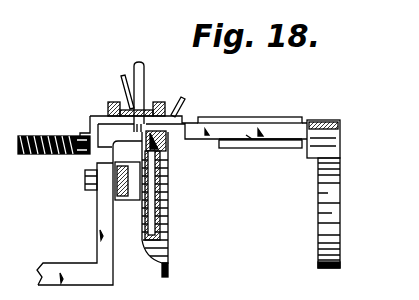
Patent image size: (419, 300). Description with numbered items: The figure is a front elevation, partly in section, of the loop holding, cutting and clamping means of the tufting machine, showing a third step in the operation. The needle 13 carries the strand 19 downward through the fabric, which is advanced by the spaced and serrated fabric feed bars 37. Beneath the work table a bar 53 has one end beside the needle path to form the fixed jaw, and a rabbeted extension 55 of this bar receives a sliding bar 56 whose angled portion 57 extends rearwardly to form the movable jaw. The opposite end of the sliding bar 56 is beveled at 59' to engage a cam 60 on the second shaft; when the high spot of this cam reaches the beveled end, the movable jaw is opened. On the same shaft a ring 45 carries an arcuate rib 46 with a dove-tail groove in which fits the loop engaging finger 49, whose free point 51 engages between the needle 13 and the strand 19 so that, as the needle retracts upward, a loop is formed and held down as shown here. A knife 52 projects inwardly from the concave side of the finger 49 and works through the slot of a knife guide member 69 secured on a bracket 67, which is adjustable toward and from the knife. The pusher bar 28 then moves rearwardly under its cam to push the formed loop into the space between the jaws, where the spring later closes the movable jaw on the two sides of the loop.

The needle 13 is at (143, 80).
The strand 19 is at (184, 101).
The pusher bar 28 is at (125, 104).
The fabric feed bars 37 is at (109, 104).
The ring 45 is at (168, 272).
The rib 46 is at (166, 233).
The loop engaging finger 49 is at (161, 218).
The point 51 is at (181, 121).
The knife 52 is at (150, 191).
The bar 53 is at (295, 102).
The rabbeted extension 55 is at (268, 144).
The bar 56 is at (258, 139).
The angled portion 57 is at (90, 117).
The beveled end 59' is at (350, 116).
The cam 60 is at (340, 141).
The bracket 67 is at (92, 218).
The knife guide member 69 is at (130, 178).